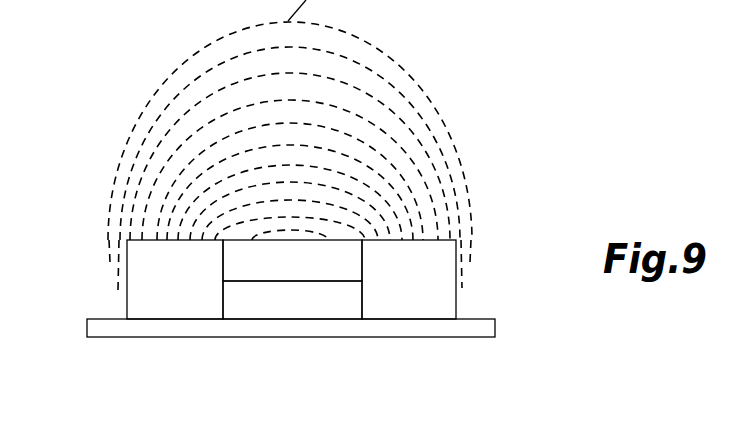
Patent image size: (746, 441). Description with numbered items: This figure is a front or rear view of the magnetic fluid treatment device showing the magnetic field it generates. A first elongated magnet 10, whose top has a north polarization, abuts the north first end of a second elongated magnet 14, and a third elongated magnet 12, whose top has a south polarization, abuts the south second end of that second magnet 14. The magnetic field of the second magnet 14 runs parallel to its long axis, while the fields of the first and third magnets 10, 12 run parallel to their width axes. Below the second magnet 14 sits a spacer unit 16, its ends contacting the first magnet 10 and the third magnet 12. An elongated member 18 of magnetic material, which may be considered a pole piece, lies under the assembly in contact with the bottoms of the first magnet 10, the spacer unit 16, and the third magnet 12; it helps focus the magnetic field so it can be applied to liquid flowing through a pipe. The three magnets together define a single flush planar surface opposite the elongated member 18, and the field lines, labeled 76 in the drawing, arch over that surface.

The first elongated magnet 10 is at (140, 306).
The third elongated magnet 12 is at (442, 300).
The second elongated magnet 14 is at (297, 270).
The spacer unit 16 is at (327, 309).
The elongated member 18 is at (193, 328).
The magnetic flux lines 76 is at (127, 268).